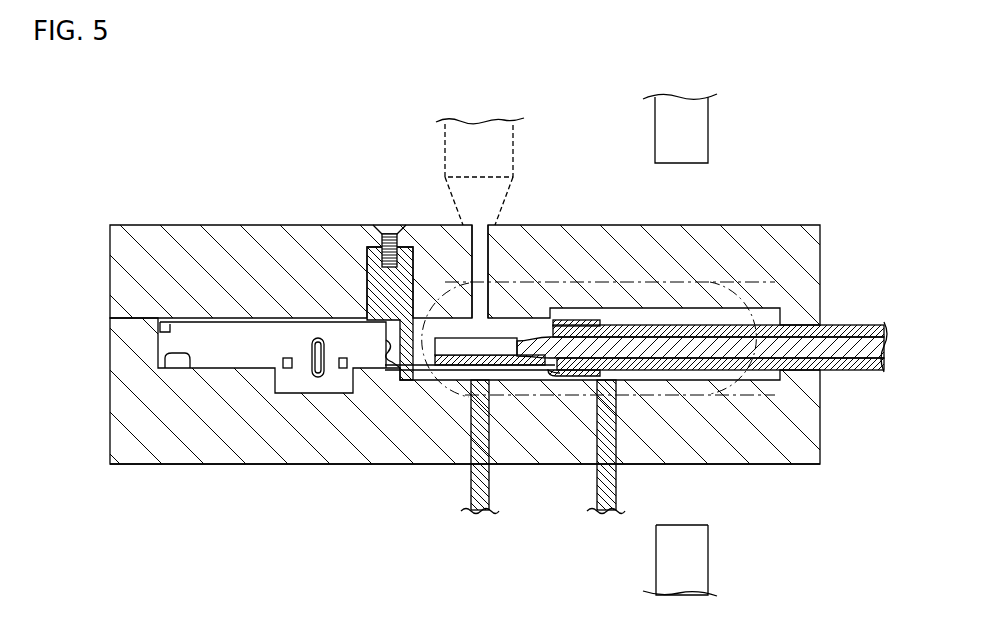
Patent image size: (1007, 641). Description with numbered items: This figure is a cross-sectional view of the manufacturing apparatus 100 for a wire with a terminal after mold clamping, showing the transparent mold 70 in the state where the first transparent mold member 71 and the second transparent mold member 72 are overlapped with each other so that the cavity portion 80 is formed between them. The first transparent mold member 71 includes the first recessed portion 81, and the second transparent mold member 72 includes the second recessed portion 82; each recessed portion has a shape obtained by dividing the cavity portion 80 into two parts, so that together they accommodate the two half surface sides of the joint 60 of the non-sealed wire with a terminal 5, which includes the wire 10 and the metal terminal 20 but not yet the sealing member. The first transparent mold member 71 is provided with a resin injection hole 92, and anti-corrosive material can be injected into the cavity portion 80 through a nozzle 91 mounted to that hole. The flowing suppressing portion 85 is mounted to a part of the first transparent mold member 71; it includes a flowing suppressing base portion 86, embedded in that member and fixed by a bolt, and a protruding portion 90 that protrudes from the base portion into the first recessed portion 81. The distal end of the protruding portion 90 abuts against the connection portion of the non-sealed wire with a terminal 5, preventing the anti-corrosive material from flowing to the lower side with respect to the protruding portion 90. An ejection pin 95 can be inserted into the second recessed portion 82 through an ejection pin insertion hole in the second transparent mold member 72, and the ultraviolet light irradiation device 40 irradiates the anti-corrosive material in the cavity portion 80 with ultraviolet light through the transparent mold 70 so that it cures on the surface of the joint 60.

The manufacturing apparatus 100 is at (480, 328).
The transparent mold 70 is at (480, 344).
The first transparent mold member 71 is at (110, 275).
The second transparent mold member 72 is at (480, 389).
The flowing suppressing portion 85 is at (367, 289).
The flowing suppressing base portion 86 is at (362, 249).
The resin injection hole 92 is at (478, 226).
The nozzle 91 is at (514, 136).
The cavity portion 80 is at (538, 325).
The first recessed portion 81 is at (730, 317).
The second recessed portion 82 is at (738, 376).
The non-sealed wire with a terminal 5 is at (702, 343).
The wire 10 is at (853, 370).
The metal terminal 20 is at (244, 355).
The protruding portion 90 is at (393, 378).
The joint 60 is at (543, 464).
The ejection pin 95 is at (480, 512).
The ultraviolet light irradiation device 40 is at (708, 134).